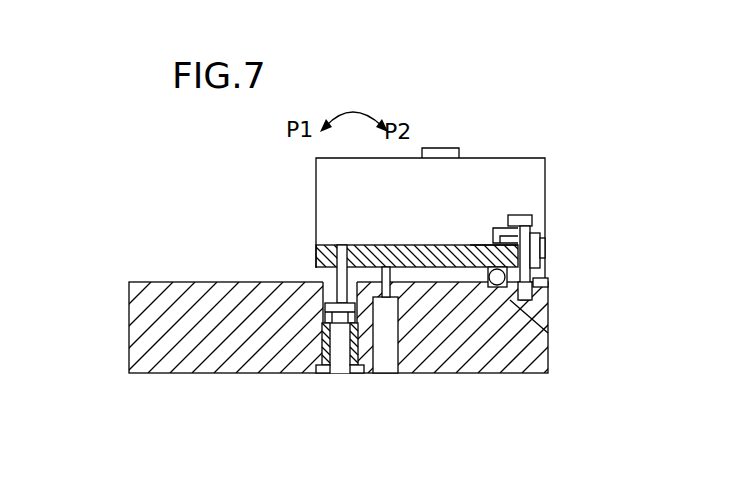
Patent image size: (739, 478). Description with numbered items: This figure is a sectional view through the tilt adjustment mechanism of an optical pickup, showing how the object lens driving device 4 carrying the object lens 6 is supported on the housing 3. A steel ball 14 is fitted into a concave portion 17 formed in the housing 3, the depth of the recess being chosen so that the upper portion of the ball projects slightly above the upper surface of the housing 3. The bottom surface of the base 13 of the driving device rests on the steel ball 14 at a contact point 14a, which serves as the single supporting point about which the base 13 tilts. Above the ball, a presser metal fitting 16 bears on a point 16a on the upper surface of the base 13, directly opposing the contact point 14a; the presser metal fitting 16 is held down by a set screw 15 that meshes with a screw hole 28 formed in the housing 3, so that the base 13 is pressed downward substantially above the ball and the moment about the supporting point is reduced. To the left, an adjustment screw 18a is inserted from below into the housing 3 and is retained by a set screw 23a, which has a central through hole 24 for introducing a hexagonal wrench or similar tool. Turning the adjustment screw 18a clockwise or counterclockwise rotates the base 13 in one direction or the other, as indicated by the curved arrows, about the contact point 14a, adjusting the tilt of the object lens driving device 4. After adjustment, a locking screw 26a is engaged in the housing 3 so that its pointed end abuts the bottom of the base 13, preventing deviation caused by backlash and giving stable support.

The housing 3 is at (129, 284).
The object lens driving device 4 is at (314, 185).
The object lens 6 is at (438, 150).
The base 13 is at (384, 245).
The steel ball 14 is at (548, 333).
The contact point 14a is at (478, 244).
The set screw 15 is at (532, 221).
The presser metal fitting 16 is at (548, 258).
The point 16a is at (493, 242).
The concave portion 17 is at (508, 300).
The adjustment screw 18a is at (325, 312).
The set screw 23a is at (322, 373).
The through hole 24 is at (347, 374).
The locking screw 26a is at (398, 300).
The screw hole 28 is at (550, 292).